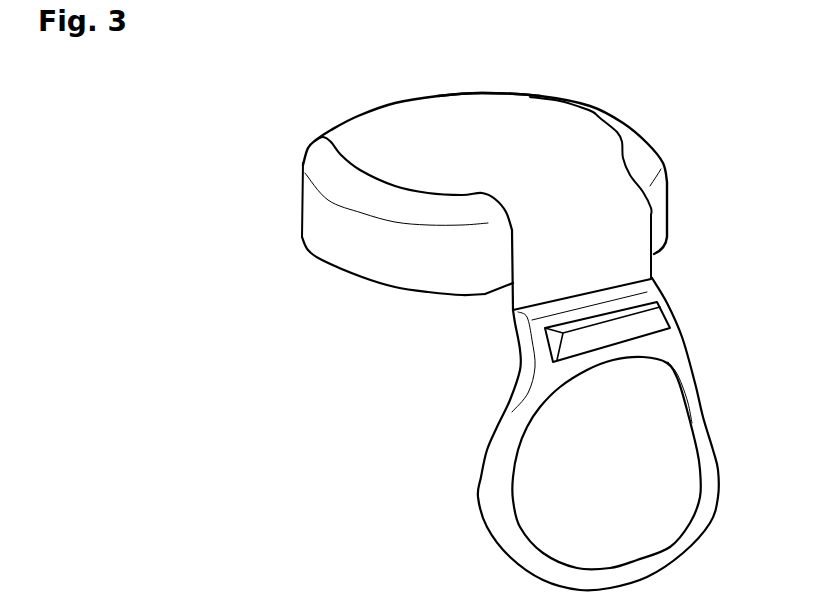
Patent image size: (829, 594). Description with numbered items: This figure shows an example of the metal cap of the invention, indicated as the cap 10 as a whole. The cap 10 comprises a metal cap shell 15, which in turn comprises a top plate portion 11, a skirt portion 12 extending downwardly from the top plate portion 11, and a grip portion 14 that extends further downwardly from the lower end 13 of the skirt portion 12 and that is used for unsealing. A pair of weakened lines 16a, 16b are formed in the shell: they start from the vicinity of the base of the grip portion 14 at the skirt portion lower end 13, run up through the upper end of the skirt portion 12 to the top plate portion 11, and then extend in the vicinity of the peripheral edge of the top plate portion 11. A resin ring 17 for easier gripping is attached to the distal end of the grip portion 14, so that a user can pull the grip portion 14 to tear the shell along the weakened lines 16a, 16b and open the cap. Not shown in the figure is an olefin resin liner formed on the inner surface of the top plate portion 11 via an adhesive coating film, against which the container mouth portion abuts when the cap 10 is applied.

The cap 10 is at (507, 320).
The top plate portion 11 is at (468, 142).
The skirt portion 12 is at (342, 237).
The lower end of the skirt portion 13 is at (500, 290).
The grip portion 14 is at (510, 300).
The metal cap shell 15 is at (358, 113).
The weakened line 16a is at (392, 184).
The weakened line 16b is at (599, 118).
The resin ring 17 is at (480, 482).